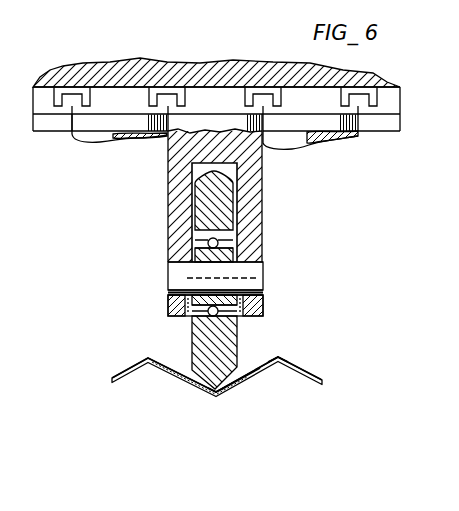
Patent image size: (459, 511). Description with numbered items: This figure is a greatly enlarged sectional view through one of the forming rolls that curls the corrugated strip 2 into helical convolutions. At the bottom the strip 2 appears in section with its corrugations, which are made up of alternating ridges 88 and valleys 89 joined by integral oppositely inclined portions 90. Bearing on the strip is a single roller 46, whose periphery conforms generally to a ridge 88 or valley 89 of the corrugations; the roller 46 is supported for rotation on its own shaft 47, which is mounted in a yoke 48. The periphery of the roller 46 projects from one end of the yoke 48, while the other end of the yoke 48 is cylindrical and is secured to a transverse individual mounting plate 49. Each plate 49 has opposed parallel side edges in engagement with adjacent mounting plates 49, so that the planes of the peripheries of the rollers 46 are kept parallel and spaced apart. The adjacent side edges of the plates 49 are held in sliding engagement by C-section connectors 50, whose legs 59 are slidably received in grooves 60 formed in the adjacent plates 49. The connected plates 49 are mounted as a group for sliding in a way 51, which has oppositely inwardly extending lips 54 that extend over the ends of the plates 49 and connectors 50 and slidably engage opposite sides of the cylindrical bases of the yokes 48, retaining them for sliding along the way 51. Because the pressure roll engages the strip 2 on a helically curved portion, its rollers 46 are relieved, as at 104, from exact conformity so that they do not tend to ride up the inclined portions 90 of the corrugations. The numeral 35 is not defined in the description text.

The strip 2 is at (298, 362).
The wear layer 35 is at (182, 64).
The roller 46 is at (231, 347).
The shaft 47 is at (258, 278).
The yoke 48 is at (87, 132).
The mounting plate 49 is at (124, 91).
The C-section connector 50 is at (61, 87).
The way 51 is at (388, 105).
The lip 54 is at (382, 127).
The leg 59 is at (150, 100).
The groove 60 is at (250, 102).
The ridge 88 is at (279, 357).
The valley 89 is at (218, 397).
The inclined portion 90 is at (248, 382).
The relief 104 is at (200, 383).